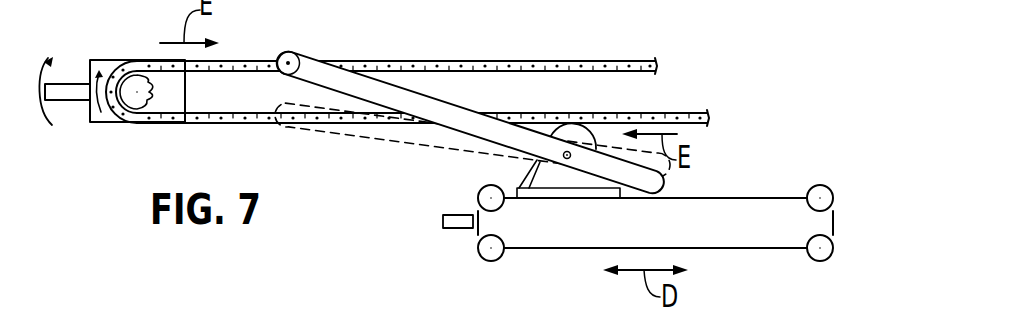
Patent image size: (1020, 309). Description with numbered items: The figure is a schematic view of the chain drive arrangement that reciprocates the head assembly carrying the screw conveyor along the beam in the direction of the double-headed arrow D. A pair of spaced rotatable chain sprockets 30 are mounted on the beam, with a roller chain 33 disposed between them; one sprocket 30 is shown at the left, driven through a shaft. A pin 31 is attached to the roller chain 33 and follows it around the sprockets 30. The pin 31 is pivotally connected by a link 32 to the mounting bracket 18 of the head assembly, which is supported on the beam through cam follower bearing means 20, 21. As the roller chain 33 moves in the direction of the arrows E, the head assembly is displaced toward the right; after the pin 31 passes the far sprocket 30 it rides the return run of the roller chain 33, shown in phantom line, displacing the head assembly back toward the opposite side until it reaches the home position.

The mounting bracket 18 is at (766, 188).
The cam follower bearing means 20 is at (480, 190).
The cam follower bearing means 21 is at (482, 253).
The chain sprocket 30 is at (137, 72).
The pin 31 is at (289, 62).
The link 32 is at (393, 87).
The roller chain 33 is at (474, 61).